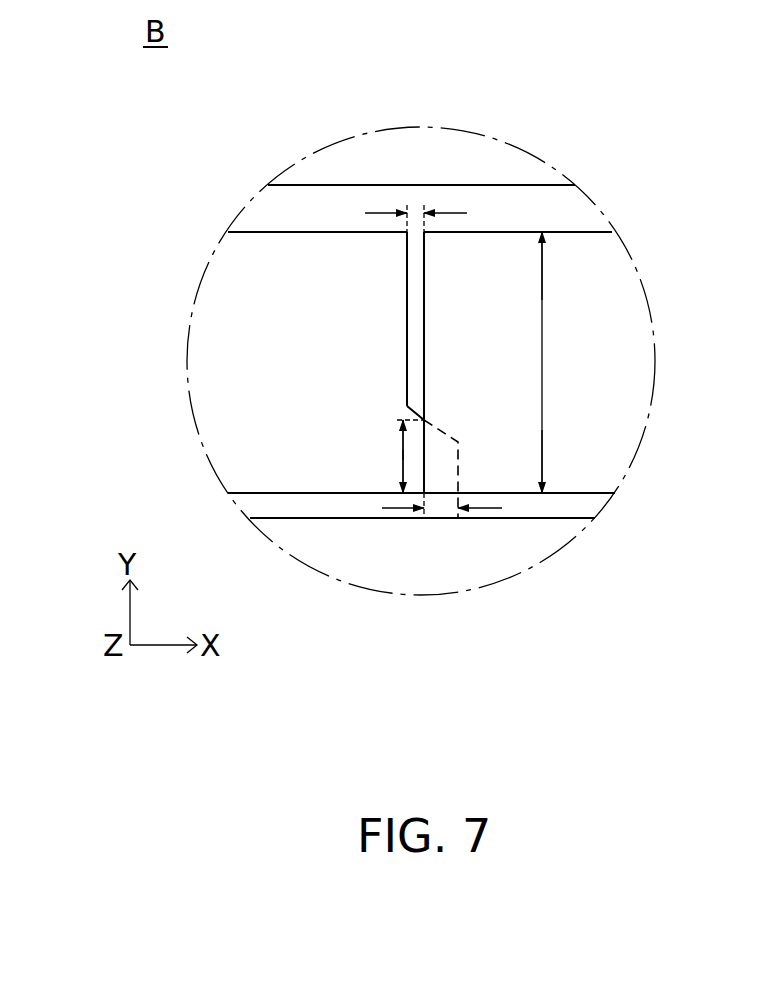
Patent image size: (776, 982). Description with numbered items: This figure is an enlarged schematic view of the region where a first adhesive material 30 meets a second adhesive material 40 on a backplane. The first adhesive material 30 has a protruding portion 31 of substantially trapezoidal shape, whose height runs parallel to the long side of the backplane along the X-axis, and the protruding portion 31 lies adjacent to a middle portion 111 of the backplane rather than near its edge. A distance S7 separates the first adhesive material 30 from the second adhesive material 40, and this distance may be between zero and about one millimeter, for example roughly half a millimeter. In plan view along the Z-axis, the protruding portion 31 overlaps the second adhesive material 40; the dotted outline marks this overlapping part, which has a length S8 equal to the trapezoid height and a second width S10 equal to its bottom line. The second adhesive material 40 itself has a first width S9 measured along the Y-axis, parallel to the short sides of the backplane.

The first adhesive material 30 is at (205, 366).
The protruding portion 31 is at (447, 460).
The second adhesive material 40 is at (628, 299).
The middle portion 111 is at (305, 540).
The distance S7 is at (420, 210).
The length S8 is at (443, 508).
The first width S9 is at (542, 367).
The second width S10 is at (403, 458).